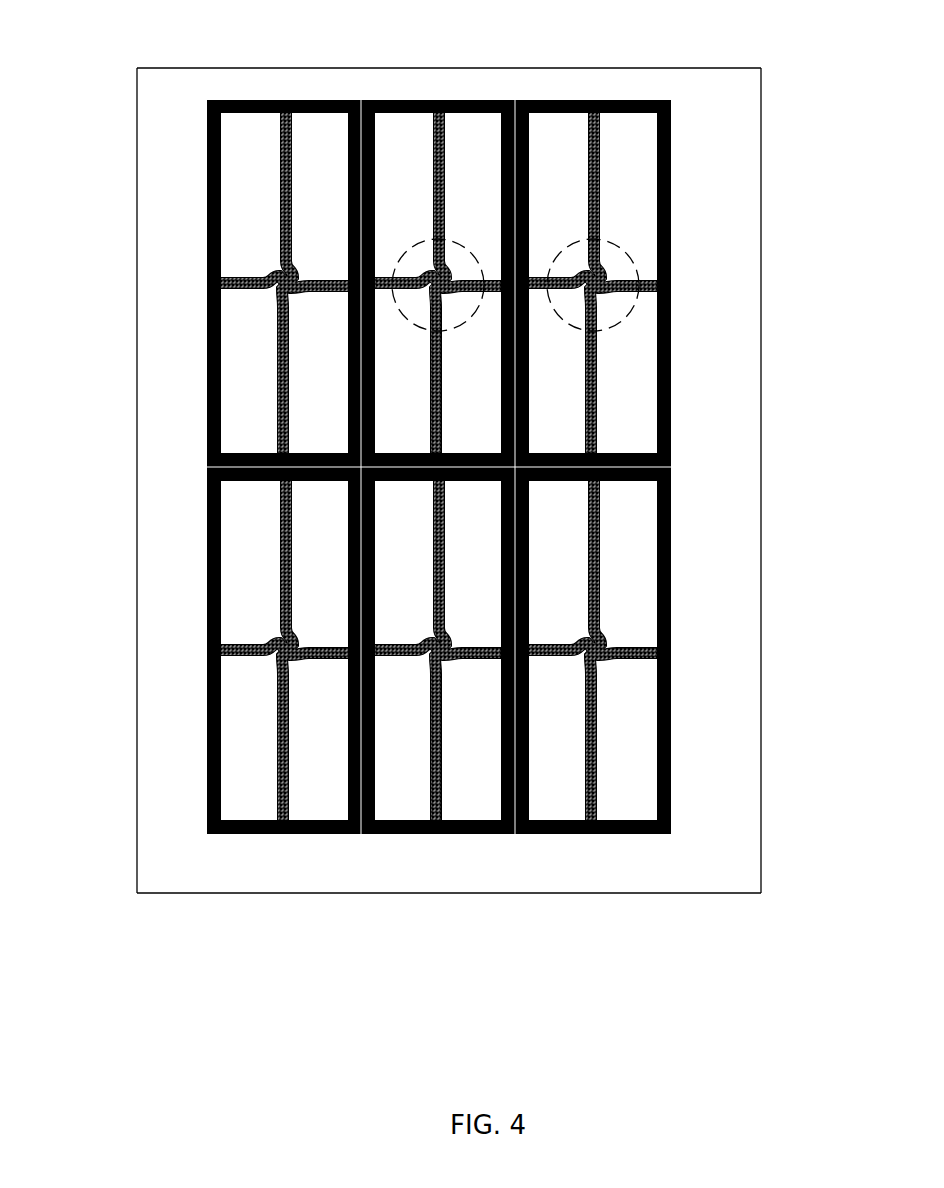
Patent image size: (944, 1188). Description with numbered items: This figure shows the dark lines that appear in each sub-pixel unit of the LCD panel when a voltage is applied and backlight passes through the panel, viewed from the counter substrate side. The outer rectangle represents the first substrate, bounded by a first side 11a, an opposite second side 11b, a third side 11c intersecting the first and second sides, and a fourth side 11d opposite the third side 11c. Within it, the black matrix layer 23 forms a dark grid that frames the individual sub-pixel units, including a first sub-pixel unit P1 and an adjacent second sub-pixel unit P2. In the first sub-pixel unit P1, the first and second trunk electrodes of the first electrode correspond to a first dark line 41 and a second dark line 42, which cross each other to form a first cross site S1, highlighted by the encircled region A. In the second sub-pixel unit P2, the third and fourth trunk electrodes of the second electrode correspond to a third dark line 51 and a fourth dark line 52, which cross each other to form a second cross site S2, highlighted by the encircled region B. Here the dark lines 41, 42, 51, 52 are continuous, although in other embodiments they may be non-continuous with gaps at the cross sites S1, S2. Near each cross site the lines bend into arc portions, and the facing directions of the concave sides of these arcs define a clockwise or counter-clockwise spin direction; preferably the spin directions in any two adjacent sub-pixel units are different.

The first side 11a is at (137, 455).
The second side 11b is at (761, 428).
The third side 11c is at (322, 68).
The fourth side 11d is at (367, 893).
The black matrix layer 23 is at (672, 572).
The first dark line 41 is at (598, 223).
The second dark line 42 is at (670, 310).
The third dark line 51 is at (433, 218).
The fourth dark line 52 is at (388, 290).
The first sub-pixel unit P1 is at (668, 231).
The second sub-pixel unit P2 is at (282, 231).
The region around first cross site A is at (592, 279).
The region around second cross site B is at (440, 279).
The first cross site S1 is at (604, 284).
The second cross site S2 is at (450, 284).